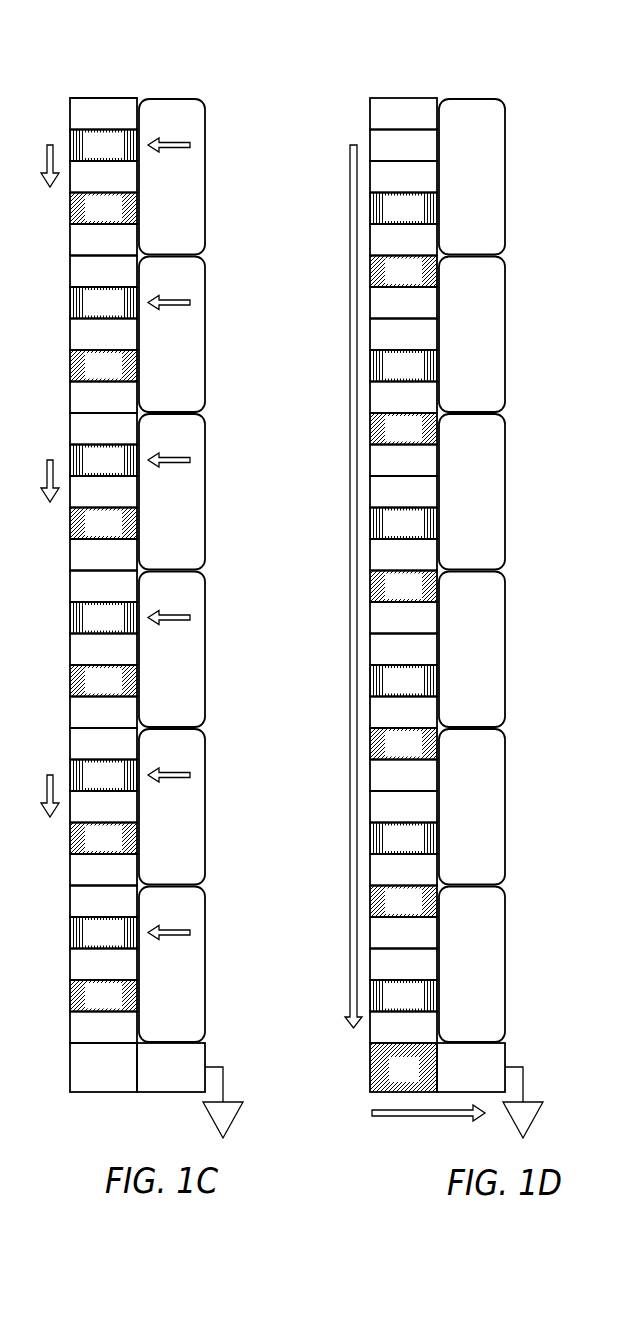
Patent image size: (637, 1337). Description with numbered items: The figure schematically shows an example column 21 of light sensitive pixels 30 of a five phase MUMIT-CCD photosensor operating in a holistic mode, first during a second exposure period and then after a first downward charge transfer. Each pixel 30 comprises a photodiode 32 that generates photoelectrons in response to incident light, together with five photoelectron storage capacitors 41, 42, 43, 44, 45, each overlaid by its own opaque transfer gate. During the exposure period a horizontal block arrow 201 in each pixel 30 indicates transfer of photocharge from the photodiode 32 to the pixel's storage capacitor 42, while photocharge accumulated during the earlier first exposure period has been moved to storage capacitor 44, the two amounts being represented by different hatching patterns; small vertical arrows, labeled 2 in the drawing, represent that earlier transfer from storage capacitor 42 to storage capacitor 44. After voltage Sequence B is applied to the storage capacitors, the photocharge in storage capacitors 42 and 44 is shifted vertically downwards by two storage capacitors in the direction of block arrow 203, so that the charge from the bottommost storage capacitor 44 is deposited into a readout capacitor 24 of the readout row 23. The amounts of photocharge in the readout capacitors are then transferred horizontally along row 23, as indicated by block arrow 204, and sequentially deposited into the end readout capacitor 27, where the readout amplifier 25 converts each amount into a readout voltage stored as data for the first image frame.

In FIG. 1C, the column 21 is at (140, 47).
In FIG. 1D, the column 21 is at (440, 47).
In FIG. 1C, the scan direction 2 is at (44, 475).
In FIG. 1C, the horizontal block arrow 201 is at (216, 464).
In FIG. 1D, the block arrow 203 is at (350, 218).
In FIG. 1D, the block arrow 204 is at (385, 1119).
In FIG. 1D, the pixel 30 is at (509, 570).
In FIG. 1C, the photodiode 32 is at (184, 1024).
In FIG. 1D, the photodiode 32 is at (484, 1024).
In FIG. 1C, the storage capacitor 41 is at (103, 507).
In FIG. 1D, the storage capacitor 41 is at (403, 507).
In FIG. 1C, the storage capacitor 42 is at (103, 539).
In FIG. 1D, the storage capacitor 42 is at (403, 539).
In FIG. 1C, the storage capacitor 43 is at (103, 570).
In FIG. 1D, the storage capacitor 43 is at (403, 570).
In FIG. 1C, the storage capacitor 44 is at (103, 602).
In FIG. 1D, the storage capacitor 44 is at (403, 602).
In FIG. 1C, the storage capacitor 45 is at (103, 633).
In FIG. 1D, the storage capacitor 45 is at (403, 633).
In FIG. 1C, the row of readout capacitors 23 is at (102, 1067).
In FIG. 1D, the row of readout capacitors 23 is at (409, 1067).
In FIG. 1C, the readout capacitor 24 is at (91, 1080).
In FIG. 1D, the readout capacitor 24 is at (391, 1080).
In FIG. 1C, the end readout capacitor 27 is at (184, 1080).
In FIG. 1D, the end readout capacitor 27 is at (484, 1080).
In FIG. 1C, the readout amplifier 25 is at (237, 1118).
In FIG. 1D, the readout amplifier 25 is at (516, 1138).